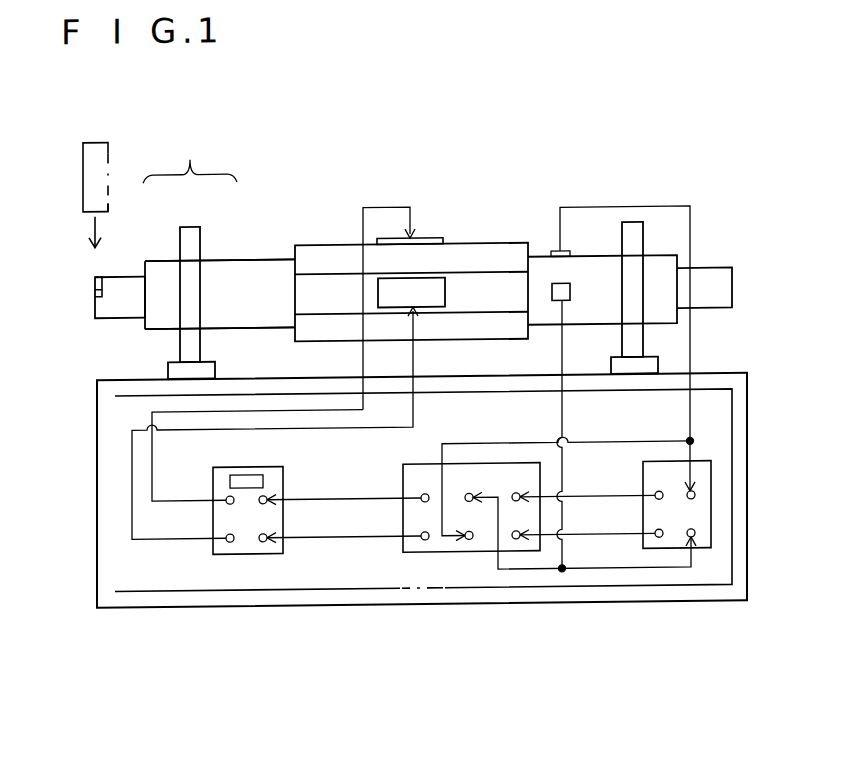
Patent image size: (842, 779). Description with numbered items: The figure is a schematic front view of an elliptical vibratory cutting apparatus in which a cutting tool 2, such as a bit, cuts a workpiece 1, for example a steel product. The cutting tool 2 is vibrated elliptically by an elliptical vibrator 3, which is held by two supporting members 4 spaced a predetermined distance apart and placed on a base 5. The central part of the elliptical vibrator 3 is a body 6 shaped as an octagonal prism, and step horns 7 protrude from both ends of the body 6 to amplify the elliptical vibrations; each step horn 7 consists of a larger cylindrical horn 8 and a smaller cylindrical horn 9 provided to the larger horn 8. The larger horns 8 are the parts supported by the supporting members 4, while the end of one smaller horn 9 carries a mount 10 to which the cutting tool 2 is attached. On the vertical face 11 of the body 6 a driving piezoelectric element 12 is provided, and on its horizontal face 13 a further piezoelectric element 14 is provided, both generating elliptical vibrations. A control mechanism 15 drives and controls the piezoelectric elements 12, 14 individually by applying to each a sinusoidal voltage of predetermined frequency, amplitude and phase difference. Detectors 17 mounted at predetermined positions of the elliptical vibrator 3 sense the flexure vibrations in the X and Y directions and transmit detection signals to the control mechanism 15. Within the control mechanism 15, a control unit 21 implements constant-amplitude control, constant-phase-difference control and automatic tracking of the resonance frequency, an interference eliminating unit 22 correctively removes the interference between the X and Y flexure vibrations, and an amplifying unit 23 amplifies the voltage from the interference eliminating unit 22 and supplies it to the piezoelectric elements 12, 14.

The workpiece 1 is at (84, 186).
The cutting tool 2 is at (95, 290).
The elliptical vibrator 3 is at (528, 154).
The supporting members 4 is at (190, 344).
The base 5 is at (732, 376).
The body 6 is at (492, 251).
The step horns 7 is at (537, 268).
The larger cylindrical horn 8 is at (218, 287).
The smaller cylindrical horn 9 is at (122, 287).
The mount 10 is at (93, 278).
The vertical face 11 is at (335, 294).
The piezoelectric element 12 is at (428, 293).
The horizontal face 13 is at (330, 244).
The piezoelectric element 14 is at (433, 238).
The control mechanism 15 is at (115, 526).
The detectors 17 is at (570, 293).
The control unit 21 is at (699, 551).
The interference eliminating unit 22 is at (463, 552).
The amplifying unit 23 is at (245, 552).